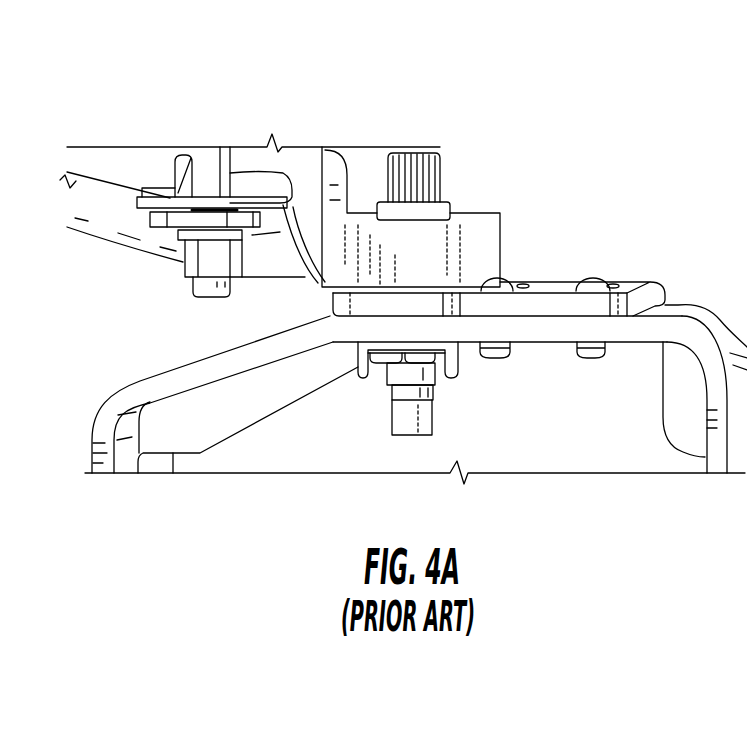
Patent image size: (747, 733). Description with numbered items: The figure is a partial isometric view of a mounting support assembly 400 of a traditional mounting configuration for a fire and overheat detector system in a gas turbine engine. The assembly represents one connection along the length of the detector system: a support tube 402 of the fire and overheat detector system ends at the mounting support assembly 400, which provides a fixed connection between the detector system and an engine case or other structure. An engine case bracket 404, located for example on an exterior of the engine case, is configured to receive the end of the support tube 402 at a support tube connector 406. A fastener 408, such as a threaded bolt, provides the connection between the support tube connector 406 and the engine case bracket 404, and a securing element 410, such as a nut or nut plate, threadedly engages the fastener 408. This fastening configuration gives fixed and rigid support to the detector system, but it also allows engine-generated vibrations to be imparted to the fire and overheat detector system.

The mounting support assembly 400 is at (636, 202).
The support tube 402 is at (100, 197).
The engine case bracket 404 is at (545, 305).
The support tube connector 406 is at (460, 253).
The fastener 408 is at (412, 423).
The securing element 410 is at (368, 367).